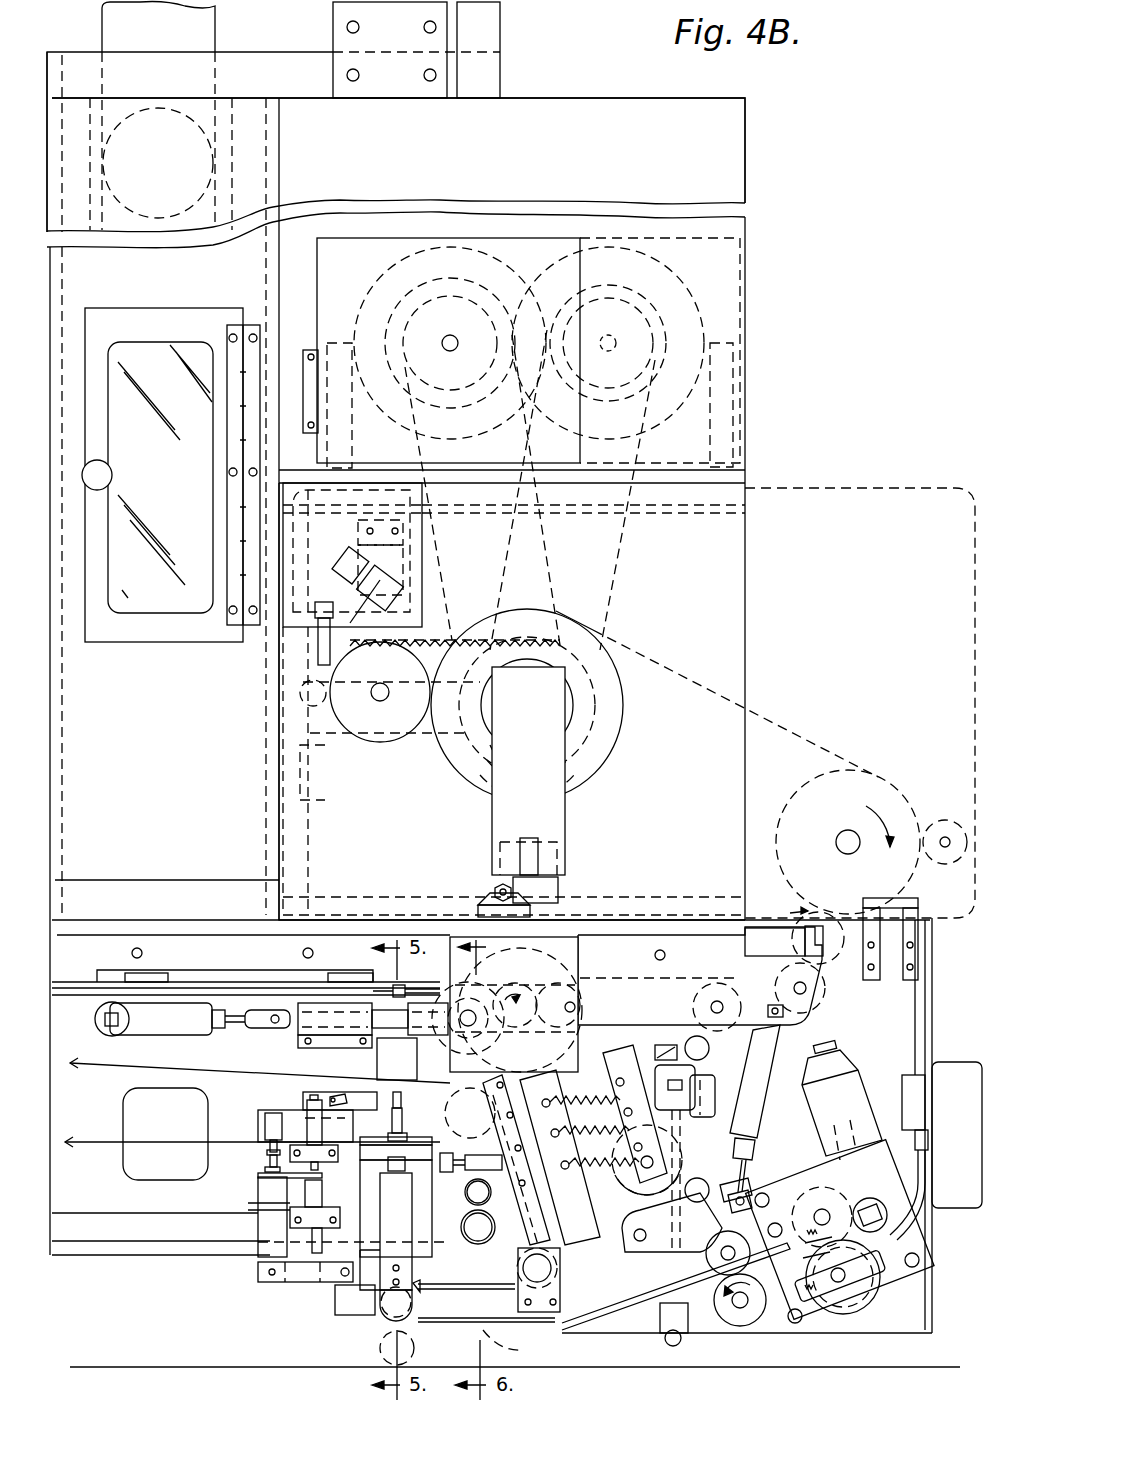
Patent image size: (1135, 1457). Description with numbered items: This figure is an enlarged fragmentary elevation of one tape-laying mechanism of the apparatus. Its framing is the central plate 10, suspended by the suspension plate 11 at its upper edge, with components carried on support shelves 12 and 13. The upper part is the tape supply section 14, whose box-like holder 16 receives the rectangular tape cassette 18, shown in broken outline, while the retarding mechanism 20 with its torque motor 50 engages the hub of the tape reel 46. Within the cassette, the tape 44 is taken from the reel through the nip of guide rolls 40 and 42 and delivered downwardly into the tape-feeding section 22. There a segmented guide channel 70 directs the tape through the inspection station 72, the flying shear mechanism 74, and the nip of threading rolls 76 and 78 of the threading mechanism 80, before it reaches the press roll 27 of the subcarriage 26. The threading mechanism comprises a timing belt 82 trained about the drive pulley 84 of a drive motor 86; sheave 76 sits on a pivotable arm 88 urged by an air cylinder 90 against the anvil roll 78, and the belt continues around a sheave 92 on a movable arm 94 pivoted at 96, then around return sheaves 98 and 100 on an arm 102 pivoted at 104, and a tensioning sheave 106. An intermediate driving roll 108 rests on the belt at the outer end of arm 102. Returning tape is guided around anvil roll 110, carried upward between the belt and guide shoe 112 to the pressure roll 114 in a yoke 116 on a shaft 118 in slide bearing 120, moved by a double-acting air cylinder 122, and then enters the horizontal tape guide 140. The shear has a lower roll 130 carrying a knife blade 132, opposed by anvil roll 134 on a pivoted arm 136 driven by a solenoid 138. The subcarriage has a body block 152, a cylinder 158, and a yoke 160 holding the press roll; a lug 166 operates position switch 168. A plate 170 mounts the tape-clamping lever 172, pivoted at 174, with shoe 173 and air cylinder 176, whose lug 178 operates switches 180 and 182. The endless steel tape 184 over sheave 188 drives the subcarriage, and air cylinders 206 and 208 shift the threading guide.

The central plate 10 is at (740, 128).
The suspension plate 11 is at (283, 56).
The support shelf 12 is at (743, 478).
The support shelf 13 is at (228, 908).
The tape supply section 14 is at (762, 445).
The box-like holder 16 is at (740, 588).
The tape cassette 18 is at (872, 487).
The retarding mechanism 20 is at (750, 325).
The tape-feeding section 22 is at (933, 996).
The subcarriage 26 is at (282, 1308).
The press roll 27 is at (384, 1343).
The guide roll 40 is at (868, 778).
The guide roll 42 is at (943, 818).
The tape 44 is at (799, 730).
The tape reel 46 is at (616, 750).
The torque motor 50 is at (682, 290).
The guide channel 70 is at (918, 1011).
The inspection station 72 is at (968, 1144).
The flying shear mechanism 74 is at (795, 1173).
The threading roll 76 is at (739, 1215).
The anvil roll 78 is at (741, 1318).
The threading mechanism 80 is at (742, 1068).
The timing belt 82 is at (703, 976).
The drive pulley 84 is at (536, 1028).
The drive motor 86 is at (582, 958).
The pivotable arm 88 is at (703, 1180).
The air cylinder 90 is at (763, 1083).
The sheave 92 is at (659, 1222).
The movable arm 94 is at (568, 1178).
The pivot 96 is at (568, 1212).
The return sheave 98 is at (812, 1010).
The second return sheave 100 is at (702, 1004).
The arm 102 is at (638, 1018).
The pivot 104 is at (625, 1105).
The tensioning sheave 106 is at (672, 1150).
The intermediate driving roll 108 is at (840, 916).
The anvil roll 110 is at (573, 1337).
The guide shoe 112 is at (595, 1118).
The pressure roll 114 is at (500, 988).
The yoke 116 is at (430, 1037).
The shaft 118 is at (385, 1015).
The slide bearing 120 is at (316, 1025).
The double-acting air cylinder 122 is at (180, 1008).
The lower roll 130 is at (852, 1313).
The knife blade 132 is at (930, 1255).
The anvil roll 134 is at (830, 1186).
The pivoted arm 136 is at (878, 1215).
The solenoid 138 is at (856, 1113).
The horizontal tape guide 140 is at (416, 990).
The body block 152 is at (470, 1191).
The double-acting air cylinder 158 is at (413, 1072).
The yoke 160 is at (378, 1290).
The lug 166 is at (413, 1234).
The position switch 168 is at (402, 1106).
The plate 170 is at (300, 1192).
The tape-clamping lever 172 is at (258, 1275).
The shoe 173 is at (372, 1312).
The pivot 174 is at (343, 1277).
The air cylinder 176 is at (262, 1228).
The lug 178 is at (270, 1170).
The position switch 180 is at (318, 1203).
The position switch 182 is at (312, 1128).
The endless steel tape 184 is at (248, 1066).
The sheave 188 is at (487, 1121).
The air cylinder 206 is at (483, 1197).
The air cylinder 208 is at (464, 1277).